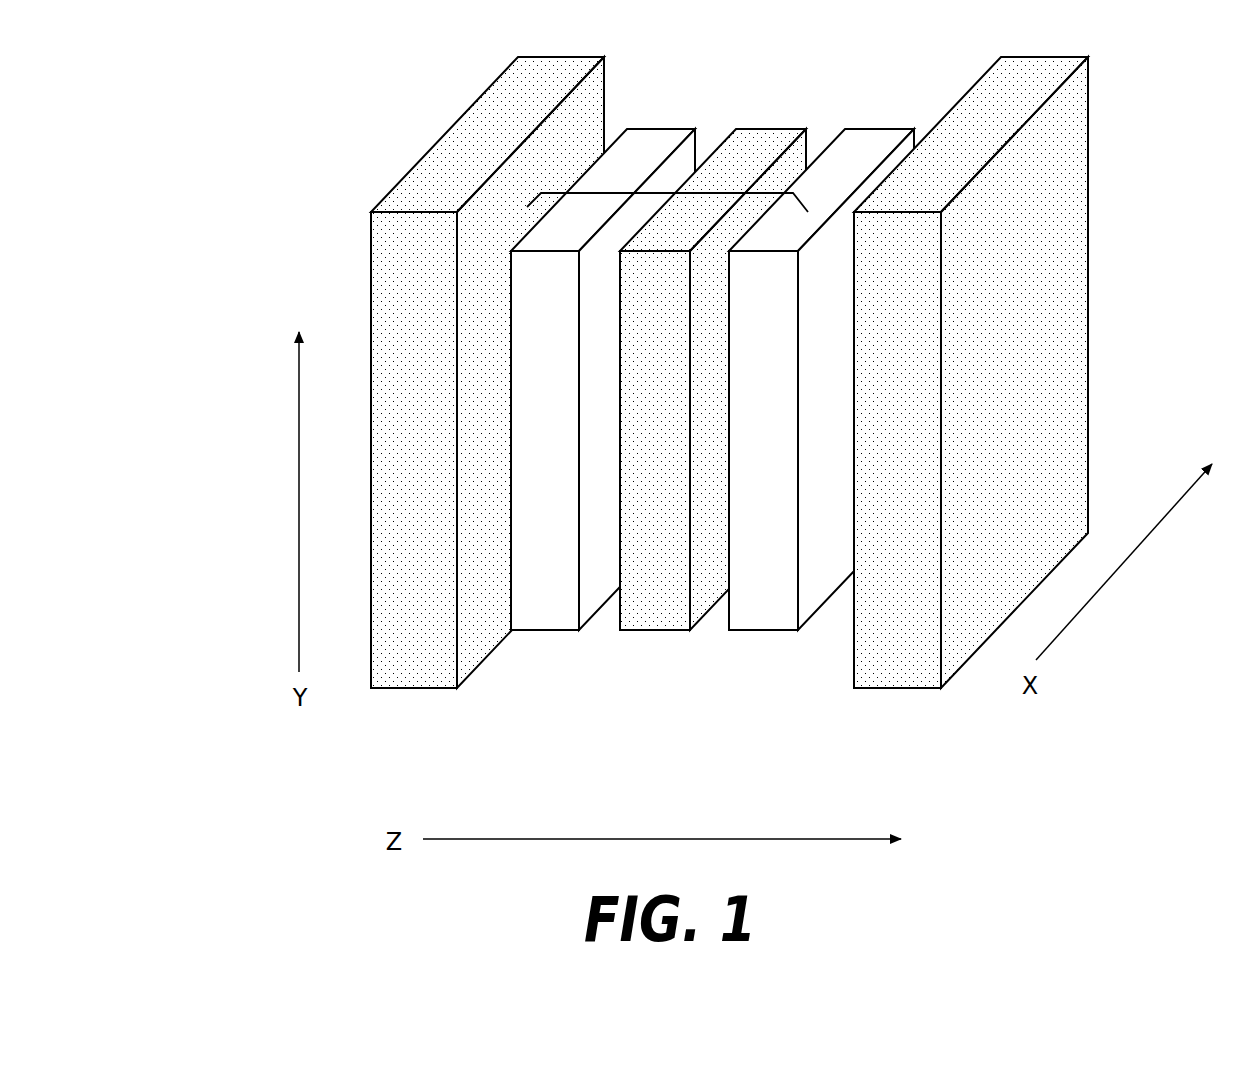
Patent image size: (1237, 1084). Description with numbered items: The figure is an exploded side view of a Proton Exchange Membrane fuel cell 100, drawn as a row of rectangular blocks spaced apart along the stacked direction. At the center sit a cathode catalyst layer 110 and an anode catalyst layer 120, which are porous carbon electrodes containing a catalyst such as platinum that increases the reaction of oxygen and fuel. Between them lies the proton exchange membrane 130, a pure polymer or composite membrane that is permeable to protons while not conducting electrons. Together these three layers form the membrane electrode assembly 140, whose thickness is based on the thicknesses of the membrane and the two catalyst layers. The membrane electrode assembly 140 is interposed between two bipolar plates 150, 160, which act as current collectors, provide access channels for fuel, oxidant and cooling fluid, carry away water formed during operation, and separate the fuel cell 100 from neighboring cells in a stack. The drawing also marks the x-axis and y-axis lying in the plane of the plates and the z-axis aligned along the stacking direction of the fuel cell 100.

The fuel cell 100 is at (638, 426).
The cathode catalyst layer 110 is at (535, 630).
The anode catalyst layer 120 is at (760, 630).
The proton exchange membrane 130 is at (647, 630).
The membrane electrode assembly 140 is at (665, 192).
The bipolar plate 150 is at (407, 688).
The bipolar plate 160 is at (884, 688).